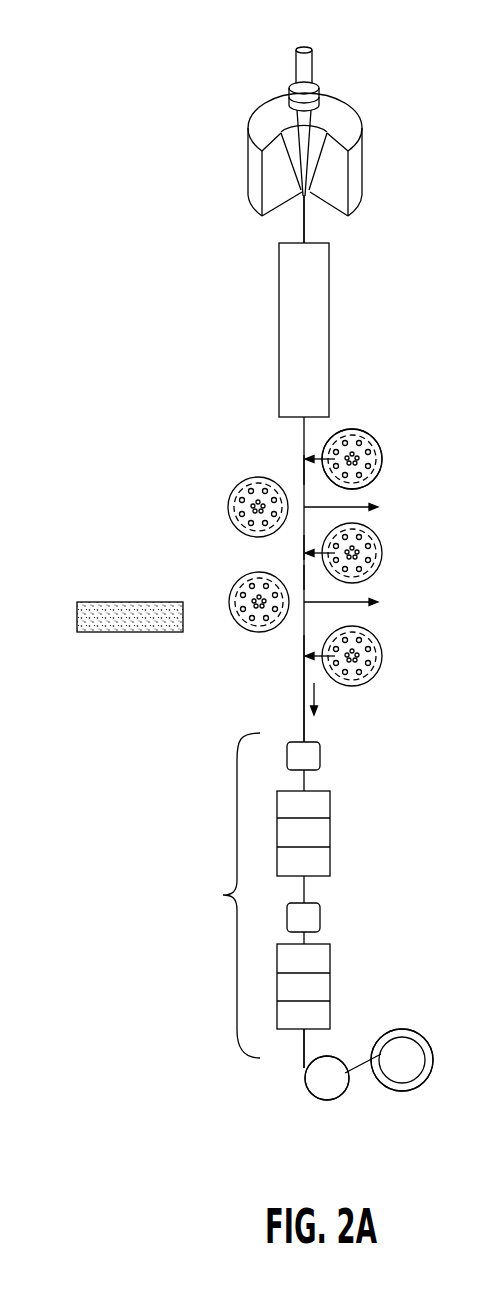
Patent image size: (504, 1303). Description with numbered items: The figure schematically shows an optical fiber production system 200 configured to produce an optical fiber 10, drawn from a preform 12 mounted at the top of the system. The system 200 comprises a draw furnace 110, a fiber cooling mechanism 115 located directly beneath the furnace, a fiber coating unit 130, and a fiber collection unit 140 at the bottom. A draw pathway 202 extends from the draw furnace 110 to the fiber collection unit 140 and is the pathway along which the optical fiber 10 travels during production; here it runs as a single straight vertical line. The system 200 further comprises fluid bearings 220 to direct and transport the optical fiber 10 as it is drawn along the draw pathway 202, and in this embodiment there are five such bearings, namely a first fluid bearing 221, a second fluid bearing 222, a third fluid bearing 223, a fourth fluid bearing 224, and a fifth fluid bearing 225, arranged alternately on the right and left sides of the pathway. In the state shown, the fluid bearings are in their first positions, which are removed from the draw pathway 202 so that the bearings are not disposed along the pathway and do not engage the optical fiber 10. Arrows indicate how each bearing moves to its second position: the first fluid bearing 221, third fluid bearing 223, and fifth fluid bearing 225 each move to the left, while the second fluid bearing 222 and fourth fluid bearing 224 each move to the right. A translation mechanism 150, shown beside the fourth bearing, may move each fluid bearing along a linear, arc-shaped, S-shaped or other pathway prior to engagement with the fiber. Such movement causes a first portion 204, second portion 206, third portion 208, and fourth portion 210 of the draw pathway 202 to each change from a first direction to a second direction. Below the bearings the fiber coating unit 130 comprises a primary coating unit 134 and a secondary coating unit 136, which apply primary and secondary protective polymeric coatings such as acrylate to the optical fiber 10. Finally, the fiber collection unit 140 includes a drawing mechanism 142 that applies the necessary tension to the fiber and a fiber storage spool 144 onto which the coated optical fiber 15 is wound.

The optical fiber production system 200 is at (415, 65).
The optical fiber 10 is at (296, 230).
The preform 12 is at (325, 128).
The draw furnace 110 is at (362, 128).
The fiber cooling mechanism 115 is at (320, 316).
The first portion 204 is at (303, 470).
The second portion 206 is at (303, 545).
The third portion 208 is at (303, 578).
The fourth portion 210 is at (303, 645).
The fluid bearings 220 is at (367, 437).
The first fluid bearing 221 is at (383, 459).
The second fluid bearing 222 is at (242, 480).
The third fluid bearing 223 is at (383, 553).
The fourth fluid bearing 224 is at (230, 600).
The fifth fluid bearing 225 is at (383, 656).
The translation mechanism 150 is at (83, 601).
The draw pathway 202 is at (292, 700).
The fiber coating unit 130 is at (223, 895).
The primary coating unit 134 is at (318, 835).
The secondary coating unit 136 is at (318, 982).
The coated optical fiber 15 is at (294, 1060).
The drawing mechanism 142 is at (323, 1083).
The fiber storage spool 144 is at (400, 1068).
The fiber collection unit 140 is at (399, 1146).